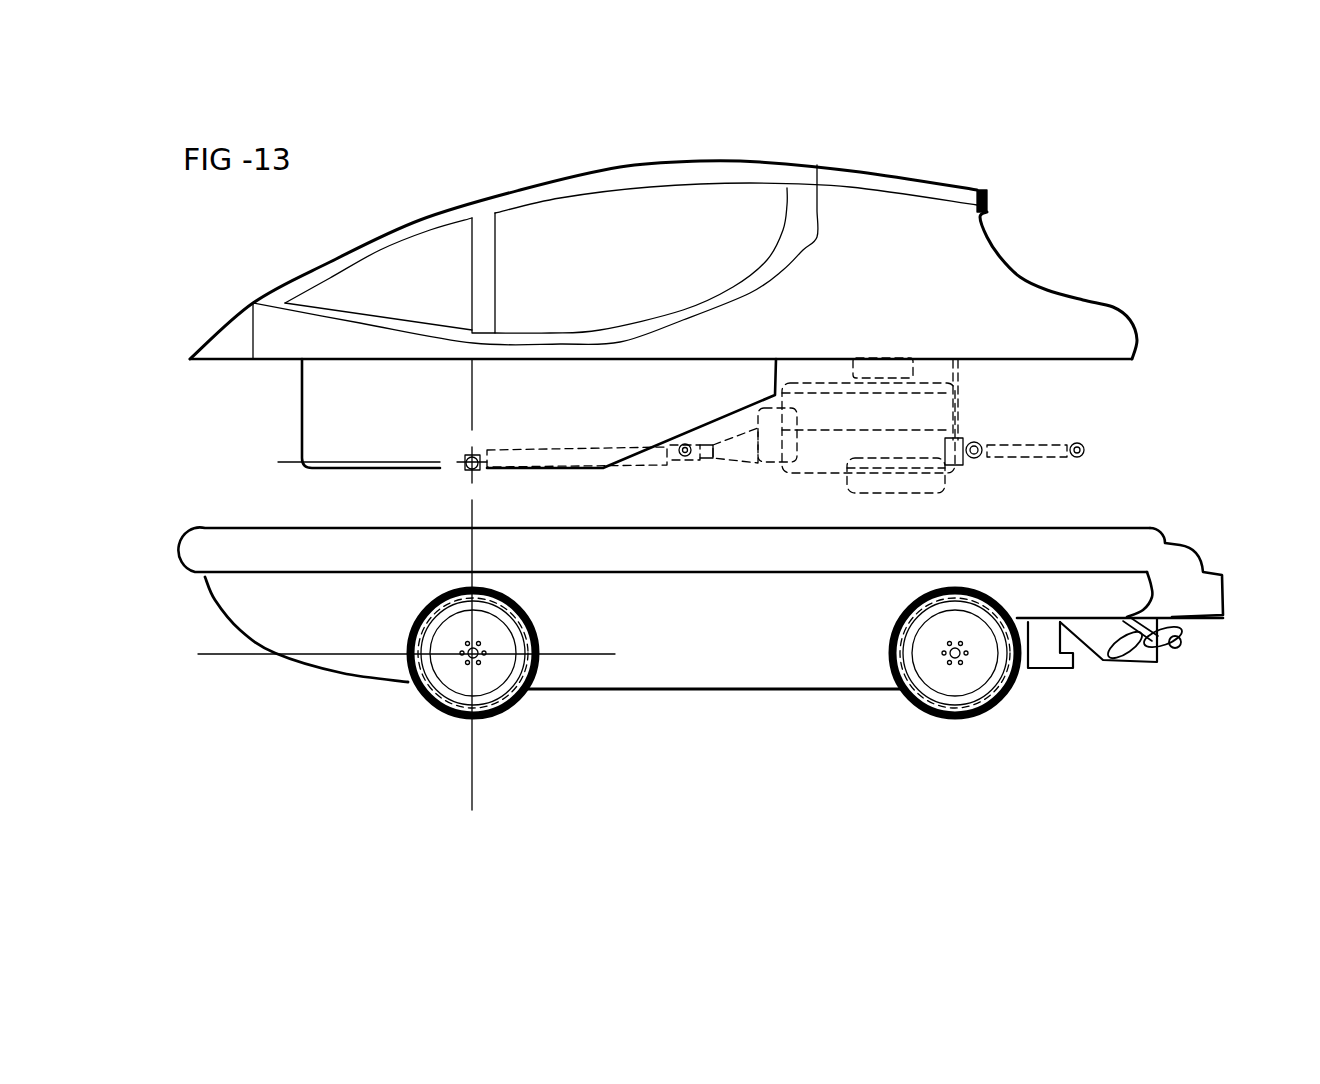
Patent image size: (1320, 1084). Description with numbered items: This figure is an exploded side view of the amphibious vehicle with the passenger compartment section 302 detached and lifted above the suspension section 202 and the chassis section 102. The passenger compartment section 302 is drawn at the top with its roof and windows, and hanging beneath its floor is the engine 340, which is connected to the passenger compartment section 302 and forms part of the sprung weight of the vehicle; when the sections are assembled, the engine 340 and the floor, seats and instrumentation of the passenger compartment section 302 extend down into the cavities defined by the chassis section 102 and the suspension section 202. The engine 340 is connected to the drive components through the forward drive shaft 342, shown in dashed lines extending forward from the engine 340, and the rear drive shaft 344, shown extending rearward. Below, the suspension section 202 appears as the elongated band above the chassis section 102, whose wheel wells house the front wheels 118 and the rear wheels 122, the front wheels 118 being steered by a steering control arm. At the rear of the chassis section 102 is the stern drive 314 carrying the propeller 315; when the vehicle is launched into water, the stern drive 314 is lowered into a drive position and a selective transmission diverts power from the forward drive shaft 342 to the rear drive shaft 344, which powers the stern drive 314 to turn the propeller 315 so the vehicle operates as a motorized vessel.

The chassis section 102 is at (275, 613).
The front wheels 118 is at (513, 705).
The rear wheels 122 is at (912, 703).
The suspension section 202 is at (257, 557).
The passenger compartment section 302 is at (413, 287).
The stern drive 314 is at (1107, 660).
The propeller 315 is at (1187, 643).
The engine 340 is at (877, 413).
The forward drive shaft 342 is at (587, 453).
The rear drive shaft 344 is at (1025, 442).